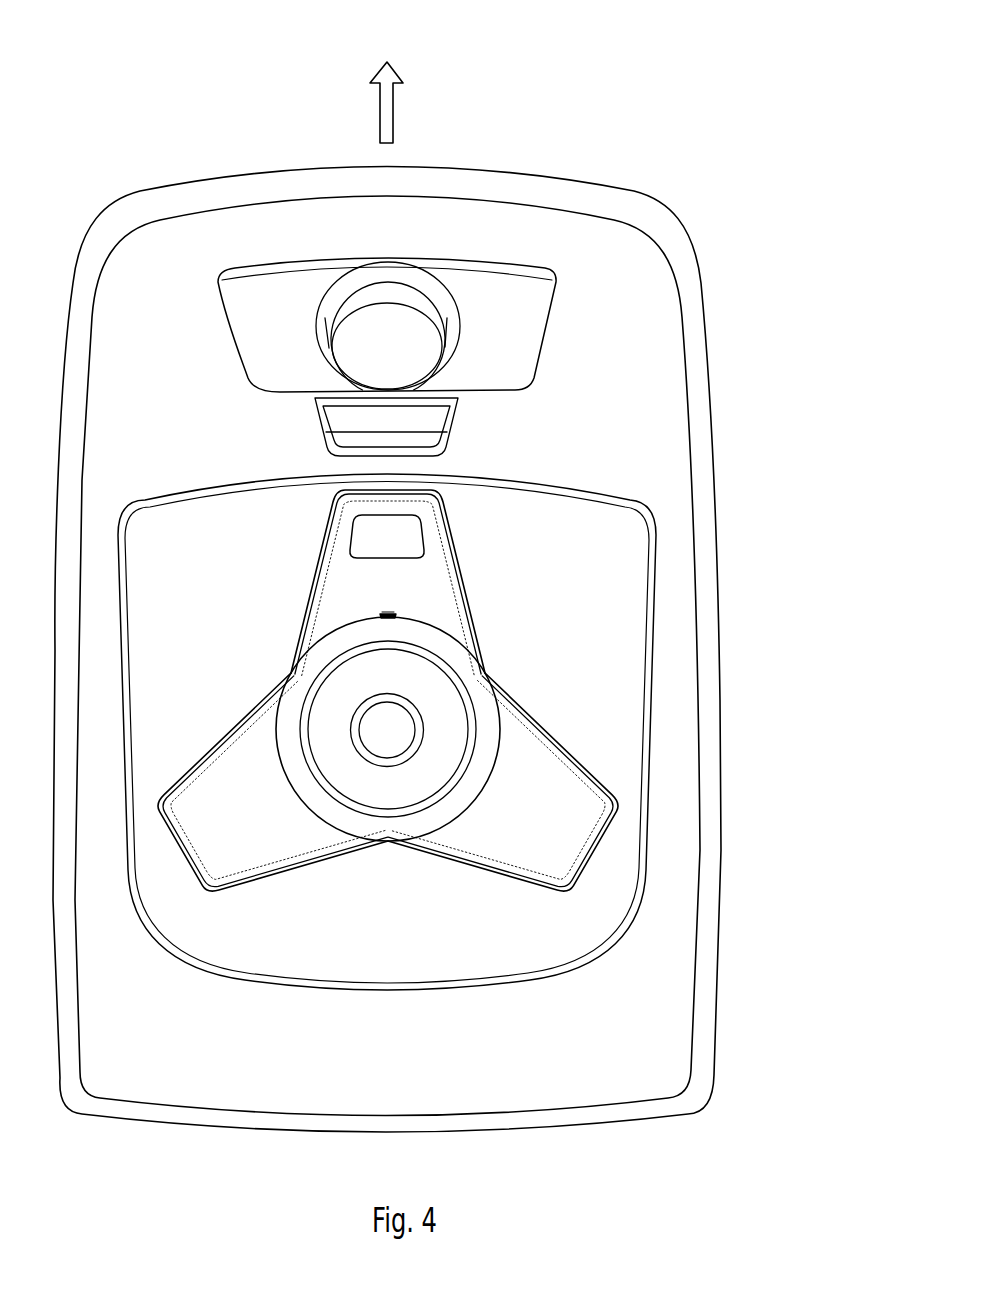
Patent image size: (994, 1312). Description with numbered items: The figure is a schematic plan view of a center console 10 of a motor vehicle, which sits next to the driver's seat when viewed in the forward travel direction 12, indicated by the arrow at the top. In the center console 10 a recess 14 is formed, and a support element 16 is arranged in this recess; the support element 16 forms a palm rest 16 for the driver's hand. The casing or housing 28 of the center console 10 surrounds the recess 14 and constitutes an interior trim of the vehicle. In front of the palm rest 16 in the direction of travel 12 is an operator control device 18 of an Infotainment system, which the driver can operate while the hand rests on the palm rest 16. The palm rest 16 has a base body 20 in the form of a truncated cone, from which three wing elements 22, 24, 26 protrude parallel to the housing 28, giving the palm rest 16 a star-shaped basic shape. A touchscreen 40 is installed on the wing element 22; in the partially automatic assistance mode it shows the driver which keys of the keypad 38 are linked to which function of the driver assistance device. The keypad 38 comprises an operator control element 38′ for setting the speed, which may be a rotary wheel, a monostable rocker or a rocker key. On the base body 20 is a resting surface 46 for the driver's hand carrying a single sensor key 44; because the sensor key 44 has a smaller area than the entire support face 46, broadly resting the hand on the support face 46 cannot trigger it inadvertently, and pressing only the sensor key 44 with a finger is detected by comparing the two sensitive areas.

The center console 10 is at (705, 164).
The forward travel direction 12 is at (380, 113).
The recess 14 is at (597, 260).
The support element (palm rest) 16 is at (518, 665).
The operator control device 18 is at (400, 345).
The base body 20 is at (327, 703).
The wing element 22 is at (435, 527).
The wing element 24 is at (522, 845).
The wing element 26 is at (253, 845).
The housing 28 is at (620, 658).
The keypad 38 is at (371, 613).
The operator control element 38′ is at (397, 616).
The touchscreen 40 is at (347, 571).
The sensor key 44 is at (380, 742).
The resting surface (support face) 46 is at (376, 686).